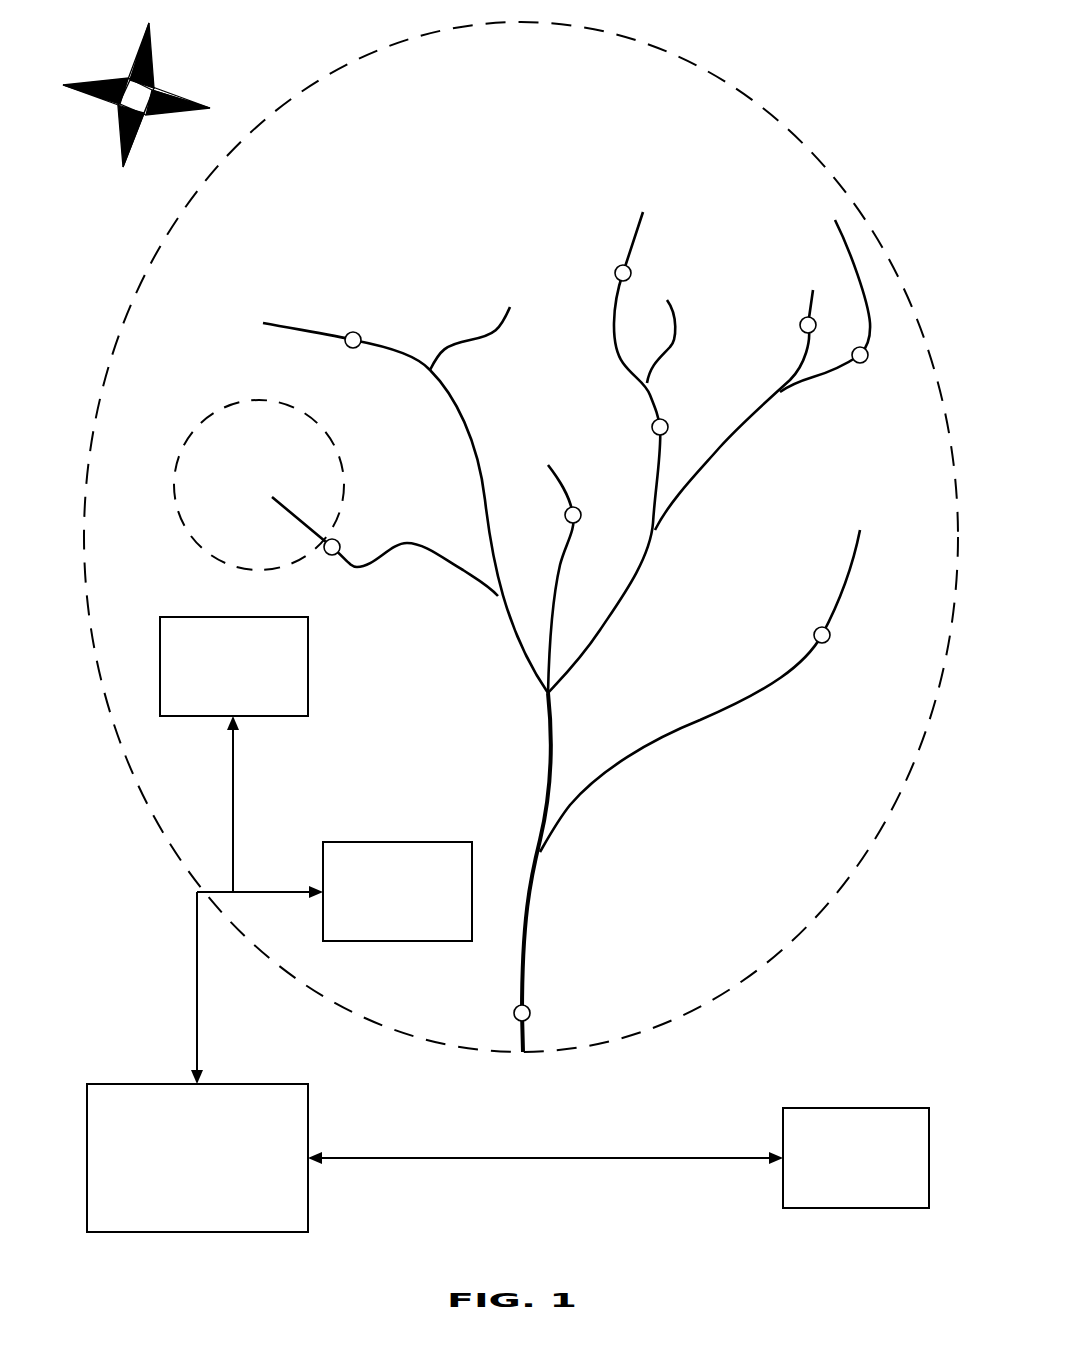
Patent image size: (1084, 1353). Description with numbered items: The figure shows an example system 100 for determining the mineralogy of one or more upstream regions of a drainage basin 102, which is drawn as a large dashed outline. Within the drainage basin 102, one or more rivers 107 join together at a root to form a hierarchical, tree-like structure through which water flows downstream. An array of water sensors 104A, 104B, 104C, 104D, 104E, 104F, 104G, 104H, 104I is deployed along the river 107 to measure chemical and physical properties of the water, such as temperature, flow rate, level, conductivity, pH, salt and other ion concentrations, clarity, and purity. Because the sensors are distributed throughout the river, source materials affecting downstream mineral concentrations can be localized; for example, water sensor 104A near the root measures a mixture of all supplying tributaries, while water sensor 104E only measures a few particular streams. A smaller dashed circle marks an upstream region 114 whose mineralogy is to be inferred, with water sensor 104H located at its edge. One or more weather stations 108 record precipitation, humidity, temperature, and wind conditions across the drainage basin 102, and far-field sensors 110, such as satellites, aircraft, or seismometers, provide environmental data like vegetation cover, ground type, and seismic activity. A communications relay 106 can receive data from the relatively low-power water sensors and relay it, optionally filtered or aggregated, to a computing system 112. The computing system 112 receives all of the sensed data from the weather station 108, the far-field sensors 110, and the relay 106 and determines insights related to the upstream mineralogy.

The system 100 is at (906, 117).
The drainage basin 102 is at (228, 160).
The water sensor 104A is at (530, 1008).
The water sensor 104B is at (815, 634).
The water sensor 104C is at (865, 362).
The water sensor 104D is at (805, 318).
The water sensor 104E is at (666, 421).
The water sensor 104F is at (631, 267).
The water sensor 104G is at (575, 507).
The water sensor 104H is at (337, 540).
The water sensor 104I is at (358, 333).
The communications relay 106 is at (397, 891).
The river 107 is at (546, 743).
The weather station 108 is at (234, 666).
The far-field sensor 110 is at (856, 1158).
The computing system 112 is at (197, 1158).
The upstream region 114 is at (260, 400).